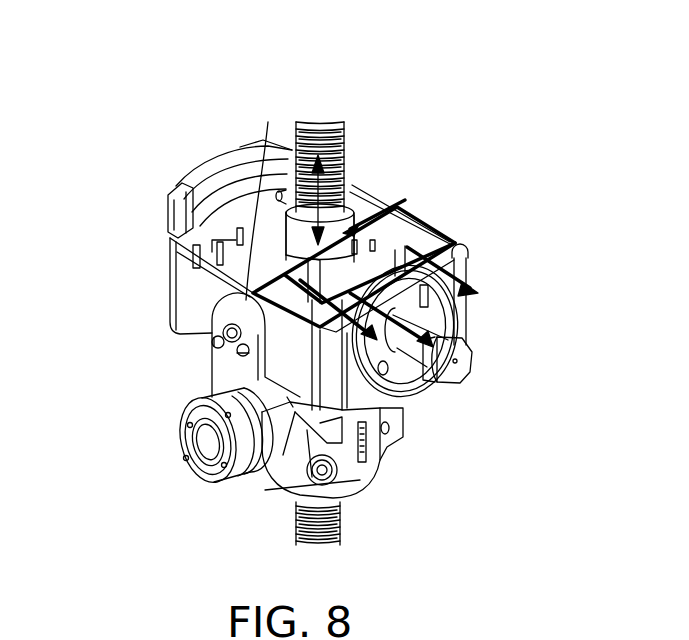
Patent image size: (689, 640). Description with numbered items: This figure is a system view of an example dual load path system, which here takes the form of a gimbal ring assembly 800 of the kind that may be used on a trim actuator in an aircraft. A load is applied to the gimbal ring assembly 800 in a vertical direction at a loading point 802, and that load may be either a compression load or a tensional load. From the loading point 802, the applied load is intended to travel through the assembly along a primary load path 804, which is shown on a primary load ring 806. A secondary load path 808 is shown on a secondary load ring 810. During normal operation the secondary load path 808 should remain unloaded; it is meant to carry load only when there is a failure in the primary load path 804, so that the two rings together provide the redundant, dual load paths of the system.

The gimbal ring assembly 800 is at (128, 227).
The loading point 802 is at (343, 190).
The primary load path 804 is at (405, 200).
The primary load ring 806 is at (192, 337).
The secondary load path 808 is at (458, 235).
The secondary load ring 810 is at (223, 237).